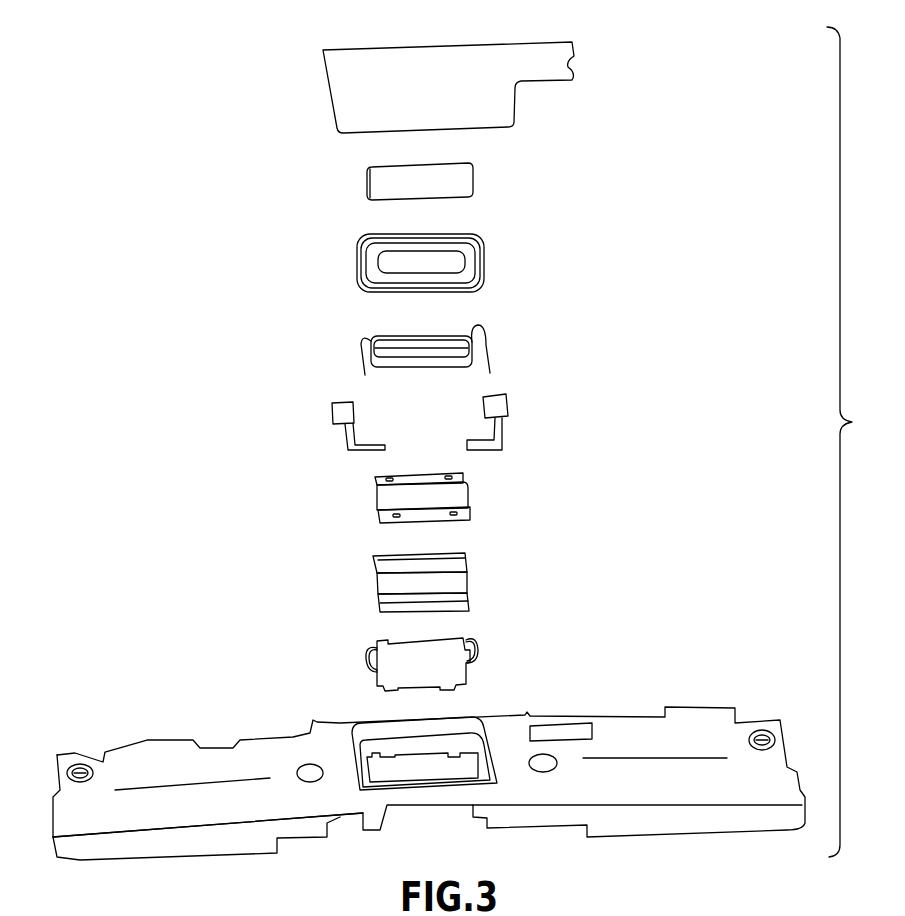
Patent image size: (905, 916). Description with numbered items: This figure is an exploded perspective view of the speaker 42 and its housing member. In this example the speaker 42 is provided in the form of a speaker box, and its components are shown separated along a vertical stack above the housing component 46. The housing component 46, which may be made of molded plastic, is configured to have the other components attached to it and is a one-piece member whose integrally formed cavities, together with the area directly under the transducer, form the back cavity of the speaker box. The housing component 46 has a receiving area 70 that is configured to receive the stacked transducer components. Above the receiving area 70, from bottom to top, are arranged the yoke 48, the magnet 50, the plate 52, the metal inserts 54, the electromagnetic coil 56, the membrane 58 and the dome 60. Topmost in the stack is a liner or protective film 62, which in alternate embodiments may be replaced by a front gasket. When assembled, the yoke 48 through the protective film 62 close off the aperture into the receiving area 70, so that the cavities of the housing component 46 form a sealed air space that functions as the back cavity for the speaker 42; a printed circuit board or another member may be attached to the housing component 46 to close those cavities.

The speaker 42 is at (181, 193).
The housing component 46 is at (725, 777).
The yoke 48 is at (494, 658).
The magnet 50 is at (494, 579).
The plate 52 is at (494, 487).
The metal inserts 54 is at (529, 416).
The electromagnetic coil 56 is at (501, 341).
The membrane 58 is at (502, 249).
The dome 60 is at (494, 169).
The protective film 62 is at (599, 68).
The receiving area 70 is at (417, 767).